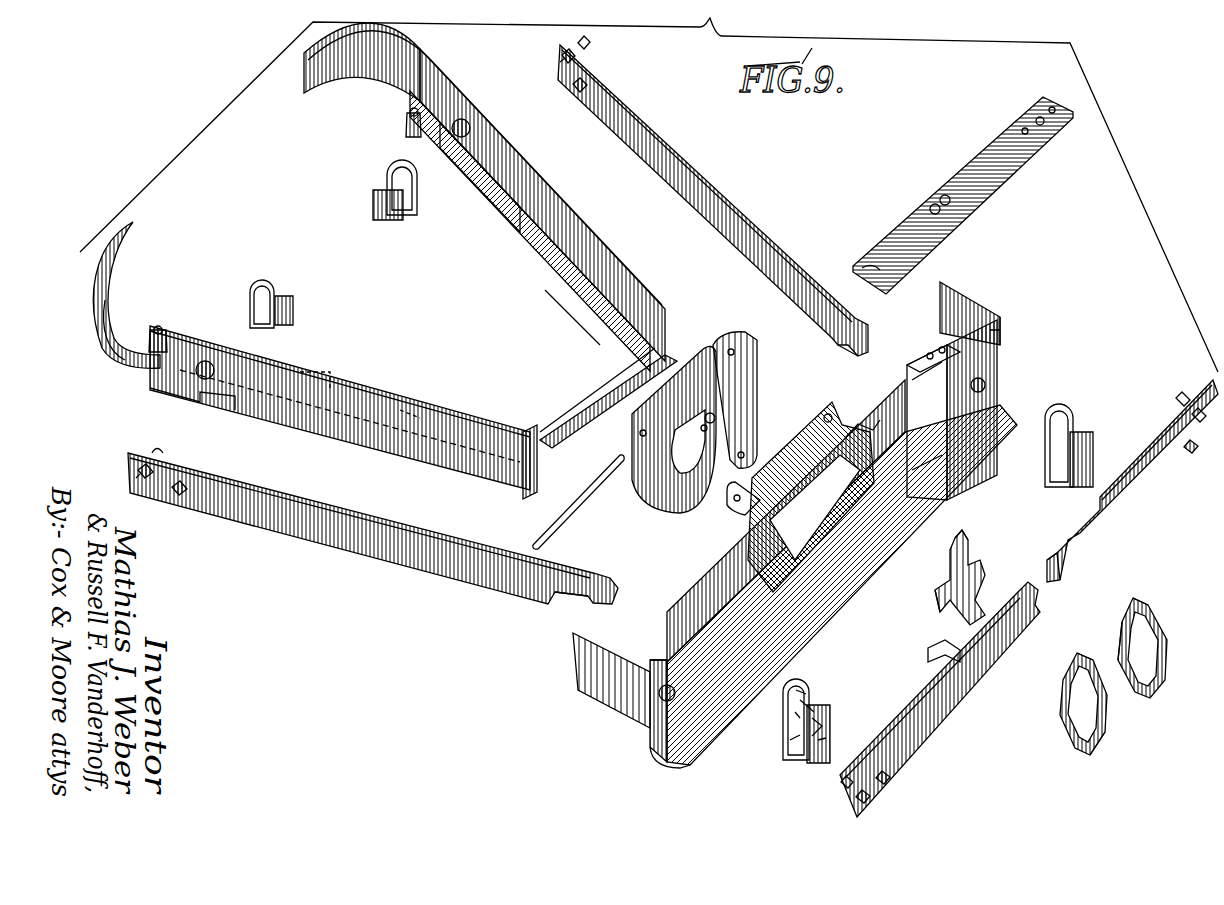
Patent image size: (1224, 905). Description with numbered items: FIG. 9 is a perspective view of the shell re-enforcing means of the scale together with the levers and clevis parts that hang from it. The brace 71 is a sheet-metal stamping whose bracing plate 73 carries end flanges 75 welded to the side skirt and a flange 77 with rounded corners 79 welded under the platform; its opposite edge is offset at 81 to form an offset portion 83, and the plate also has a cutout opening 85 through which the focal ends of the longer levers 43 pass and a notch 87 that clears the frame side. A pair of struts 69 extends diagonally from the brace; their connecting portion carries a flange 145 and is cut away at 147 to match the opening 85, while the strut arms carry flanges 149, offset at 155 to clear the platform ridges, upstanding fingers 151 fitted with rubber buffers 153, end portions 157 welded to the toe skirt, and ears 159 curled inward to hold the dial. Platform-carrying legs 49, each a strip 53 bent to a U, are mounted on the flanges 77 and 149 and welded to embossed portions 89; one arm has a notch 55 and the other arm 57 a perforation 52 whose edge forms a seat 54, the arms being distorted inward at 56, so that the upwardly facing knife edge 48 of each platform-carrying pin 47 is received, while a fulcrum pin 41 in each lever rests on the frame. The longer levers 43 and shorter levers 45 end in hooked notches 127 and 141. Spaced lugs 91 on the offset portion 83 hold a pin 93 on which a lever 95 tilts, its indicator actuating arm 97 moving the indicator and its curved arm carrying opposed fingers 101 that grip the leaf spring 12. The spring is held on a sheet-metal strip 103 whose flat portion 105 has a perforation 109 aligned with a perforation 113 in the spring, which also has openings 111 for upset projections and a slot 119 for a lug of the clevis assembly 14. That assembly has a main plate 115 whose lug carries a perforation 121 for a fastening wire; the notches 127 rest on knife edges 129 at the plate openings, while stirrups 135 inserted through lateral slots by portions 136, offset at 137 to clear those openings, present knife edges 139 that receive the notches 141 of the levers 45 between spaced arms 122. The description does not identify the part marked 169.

The leaf spring 12 is at (976, 194).
The clevis assembly 14 is at (943, 589).
The fulcrum pin 41 is at (574, 92).
The levers 43 is at (498, 341).
The levers 45 is at (1029, 598).
The platform-carrying pin 47 is at (560, 66).
The knife edge 48 is at (562, 56).
The platform-carrying legs 49 is at (691, 468).
The perforation 52 is at (812, 712).
The strip of sheet metal 53 is at (395, 222).
The seat 54 is at (795, 714).
The notch 55 is at (822, 722).
The inwardly distorted portions 56 is at (790, 740).
The arm 57 is at (808, 690).
The struts 69 is at (566, 389).
The brace 71 is at (824, 578).
The bracing plate 73 is at (786, 521).
The flanges 75 is at (962, 294).
The flange 77 is at (838, 622).
The rounded corners 79 is at (680, 762).
The offset 81 is at (745, 512).
The offset portion 83 is at (870, 418).
The cutout opening 85 is at (835, 480).
The notch 87 is at (1002, 334).
The embossed portions 89 is at (464, 118).
The lugs 91 is at (825, 414).
The pin 93 is at (580, 500).
The lever 95 is at (708, 416).
The indicator actuating arm 97 is at (748, 440).
The opposed fingers 101 is at (715, 416).
The strip of sheet metal 103 is at (938, 408).
The flat spring supporting portion 105 is at (915, 360).
The perforation 109 is at (932, 352).
The openings 111 is at (1024, 128).
The perforation 113 is at (1045, 122).
The main plate 115 is at (938, 600).
The slot 119 is at (932, 205).
The perforation 121 is at (962, 530).
The spaced arms 122 is at (928, 656).
The notches 127 is at (845, 346).
The knife edges 129 is at (583, 602).
The stirrups 135 is at (1110, 673).
The portions 136 is at (1140, 600).
The offset 137 is at (1118, 640).
The knife edges 139 is at (1110, 700).
The notches 141 is at (1055, 585).
The flange 145 is at (585, 418).
The cut away 147 is at (610, 372).
The flanges 149 is at (545, 290).
The upstanding fingers 151 is at (408, 112).
The buffers 153 is at (408, 120).
The offset 155 is at (510, 210).
The portions 157 is at (125, 360).
The ears 159 is at (308, 95).
The post 169 is at (518, 510).